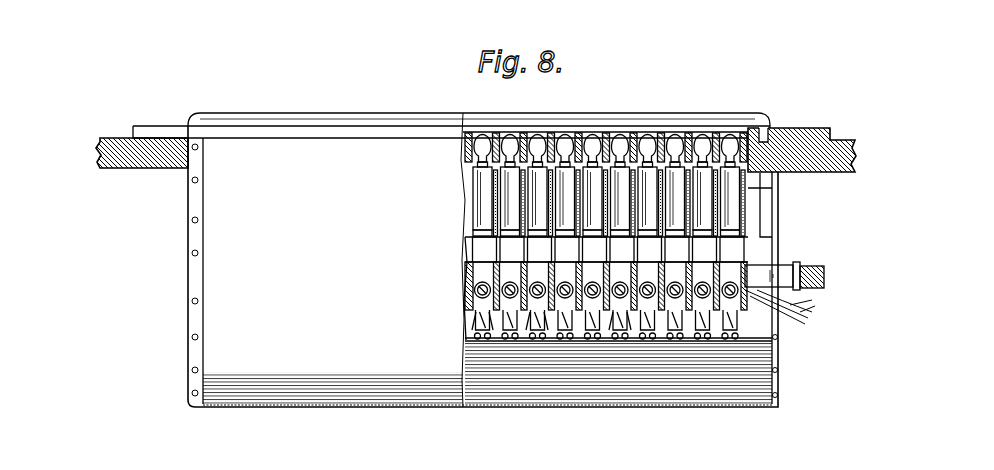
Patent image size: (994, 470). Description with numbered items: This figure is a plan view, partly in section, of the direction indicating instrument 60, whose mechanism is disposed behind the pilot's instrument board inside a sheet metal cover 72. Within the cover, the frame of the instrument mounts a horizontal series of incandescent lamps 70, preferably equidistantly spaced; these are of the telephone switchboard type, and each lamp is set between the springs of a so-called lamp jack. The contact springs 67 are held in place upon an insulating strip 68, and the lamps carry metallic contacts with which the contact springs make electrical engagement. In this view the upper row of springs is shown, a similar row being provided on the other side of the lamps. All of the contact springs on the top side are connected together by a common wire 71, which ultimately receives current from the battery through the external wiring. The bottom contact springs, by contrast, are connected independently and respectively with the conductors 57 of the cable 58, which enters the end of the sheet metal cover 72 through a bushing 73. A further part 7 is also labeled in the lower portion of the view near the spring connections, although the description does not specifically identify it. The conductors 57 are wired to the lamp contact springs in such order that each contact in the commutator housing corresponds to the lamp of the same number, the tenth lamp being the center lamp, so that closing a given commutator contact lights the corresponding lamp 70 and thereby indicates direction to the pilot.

The direction indicating instrument 60 is at (427, 113).
The incandescent lamps 70 is at (618, 136).
The insulating strip 68 is at (776, 190).
The contact springs 67 is at (705, 249).
The bushing 73 is at (794, 268).
The cable 58 is at (823, 278).
The contact spring 7 is at (496, 334).
The conductors 57 is at (543, 336).
The common wire 71 is at (616, 334).
The sheet metal cover 72 is at (718, 408).